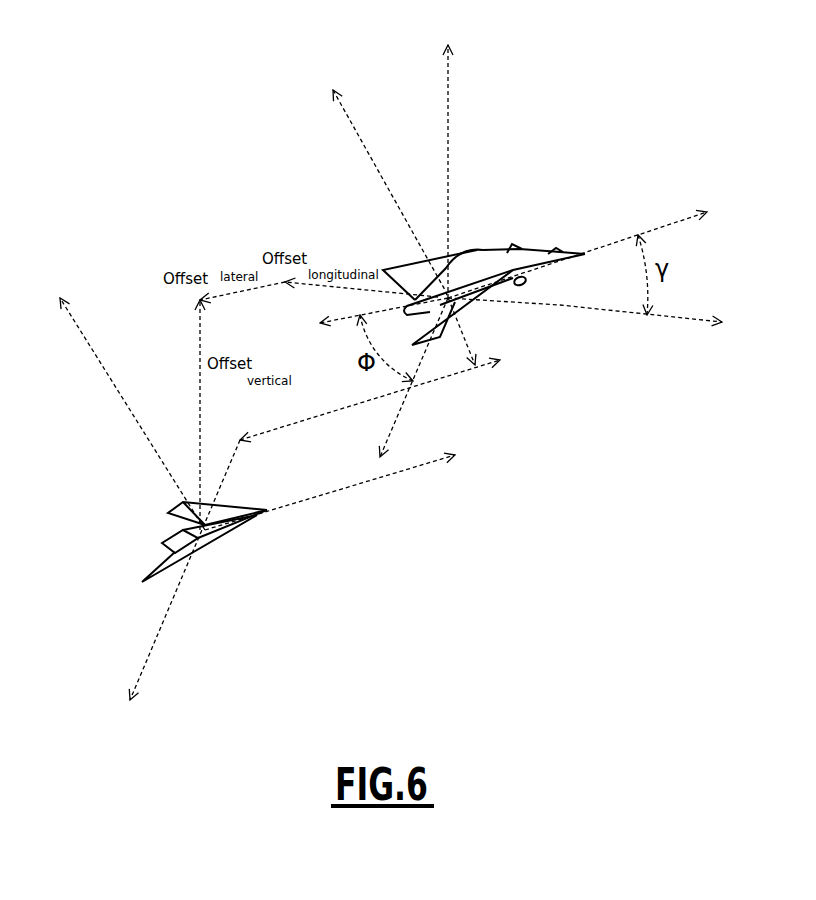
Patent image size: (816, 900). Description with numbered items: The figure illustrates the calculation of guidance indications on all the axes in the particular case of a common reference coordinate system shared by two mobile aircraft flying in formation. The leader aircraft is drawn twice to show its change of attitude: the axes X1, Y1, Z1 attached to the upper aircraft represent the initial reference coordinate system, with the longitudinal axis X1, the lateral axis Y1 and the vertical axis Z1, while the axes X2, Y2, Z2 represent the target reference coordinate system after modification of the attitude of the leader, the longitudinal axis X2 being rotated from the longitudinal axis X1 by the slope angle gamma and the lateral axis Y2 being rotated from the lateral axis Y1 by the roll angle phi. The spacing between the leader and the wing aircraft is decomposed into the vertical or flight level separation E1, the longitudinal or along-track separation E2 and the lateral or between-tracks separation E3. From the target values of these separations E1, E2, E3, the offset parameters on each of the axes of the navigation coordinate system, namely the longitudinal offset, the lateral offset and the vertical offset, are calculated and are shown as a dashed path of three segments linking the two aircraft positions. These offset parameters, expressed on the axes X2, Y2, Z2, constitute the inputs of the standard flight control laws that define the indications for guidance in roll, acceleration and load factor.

The vertical/flight level separation E1 is at (484, 294).
The longitudinal/along track separation E2 is at (370, 400).
The lateral/between tracks separation E3 is at (204, 527).
The longitudinal axis of the initial reference coordinate system X1 is at (598, 314).
The lateral axis of the initial reference coordinate system Y1 is at (371, 320).
The vertical axis of the initial reference coordinate system Z1 is at (451, 156).
The longitudinal axis of the target reference coordinate system X2 is at (469, 360).
The lateral axis of the target reference coordinate system Y2 is at (281, 515).
The vertical axis of the target reference coordinate system Z2 is at (260, 297).